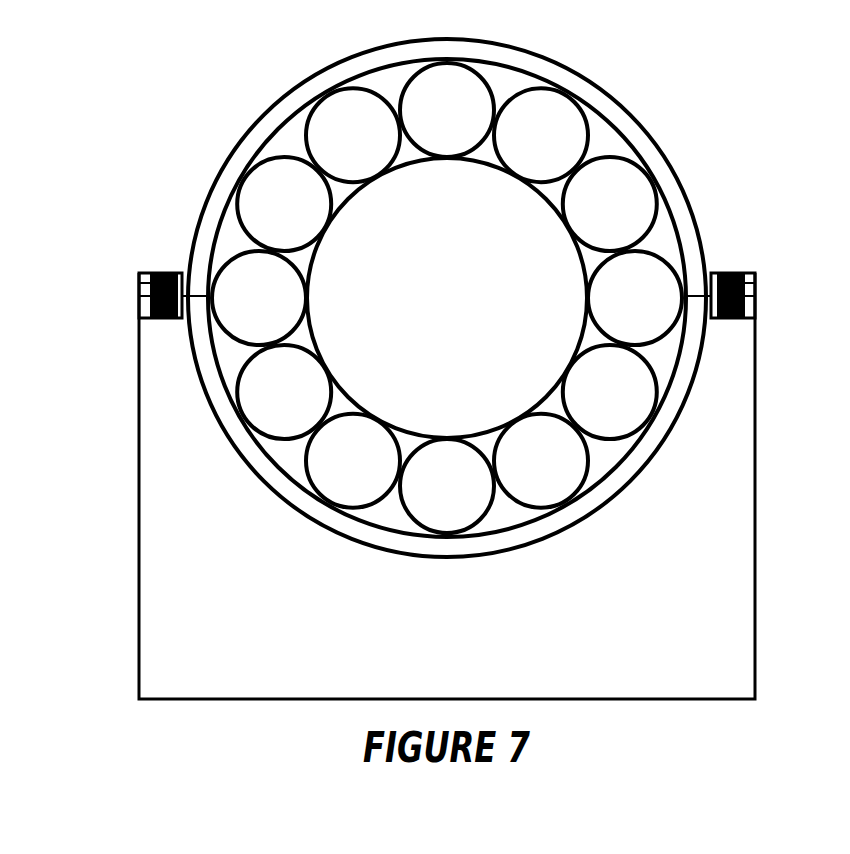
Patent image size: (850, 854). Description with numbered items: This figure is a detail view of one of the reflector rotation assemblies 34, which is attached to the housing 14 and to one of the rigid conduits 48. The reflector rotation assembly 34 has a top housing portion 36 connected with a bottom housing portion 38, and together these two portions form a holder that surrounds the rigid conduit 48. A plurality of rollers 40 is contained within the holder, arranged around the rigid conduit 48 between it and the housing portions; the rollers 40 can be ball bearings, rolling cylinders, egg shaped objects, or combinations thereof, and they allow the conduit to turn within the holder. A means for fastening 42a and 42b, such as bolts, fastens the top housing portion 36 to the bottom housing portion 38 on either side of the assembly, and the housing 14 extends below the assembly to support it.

The reflector rotation assembly 34 is at (120, 42).
The top housing portion 36 is at (621, 103).
The bottom housing portion 38 is at (620, 496).
The rollers 40 is at (403, 79).
The rigid conduit 48 is at (343, 207).
The means for fastening 42a is at (745, 283).
The means for fastening 42b is at (150, 282).
The housing 14 is at (139, 510).